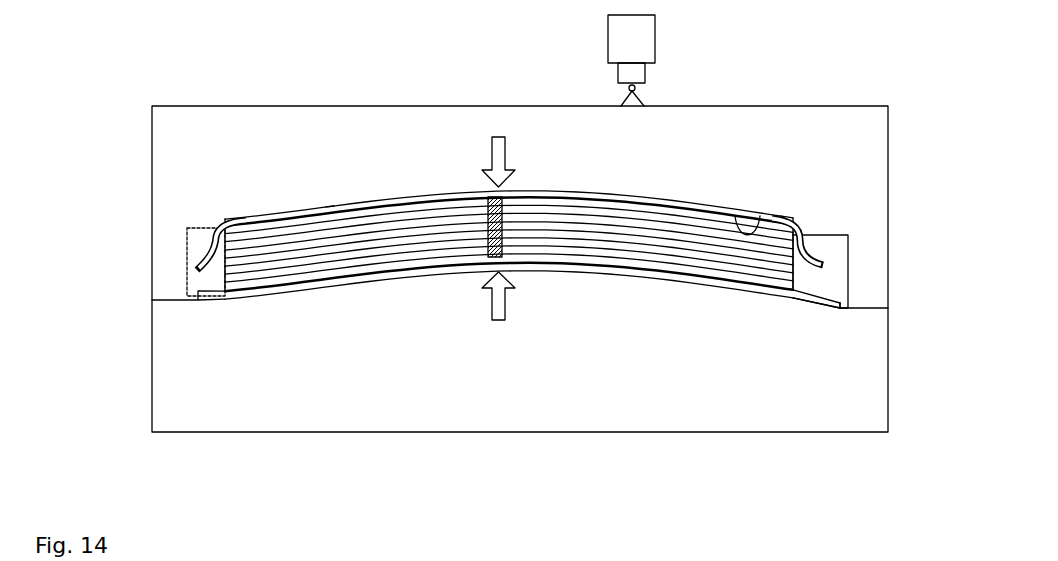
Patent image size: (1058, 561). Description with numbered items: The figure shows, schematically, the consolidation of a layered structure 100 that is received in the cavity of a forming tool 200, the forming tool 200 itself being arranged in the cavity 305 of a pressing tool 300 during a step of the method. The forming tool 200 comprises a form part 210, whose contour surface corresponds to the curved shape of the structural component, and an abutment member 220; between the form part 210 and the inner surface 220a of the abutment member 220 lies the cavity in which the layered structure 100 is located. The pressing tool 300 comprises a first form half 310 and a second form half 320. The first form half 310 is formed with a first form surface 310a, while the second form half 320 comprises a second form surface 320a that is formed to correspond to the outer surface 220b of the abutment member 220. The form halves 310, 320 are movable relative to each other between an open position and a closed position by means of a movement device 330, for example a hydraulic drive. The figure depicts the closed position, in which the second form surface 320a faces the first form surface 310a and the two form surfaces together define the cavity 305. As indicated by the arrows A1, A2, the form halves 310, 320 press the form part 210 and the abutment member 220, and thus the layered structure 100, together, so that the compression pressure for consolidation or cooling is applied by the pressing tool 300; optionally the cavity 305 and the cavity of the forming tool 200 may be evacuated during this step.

The layered structure 100 is at (805, 274).
The forming tool 200 is at (821, 215).
The form part 210 is at (820, 304).
The abutment member 220 is at (718, 208).
The inner surface of the abutment member 220a is at (760, 216).
The outer surface of the abutment member 220b is at (786, 211).
The pressing tool 300 is at (114, 95).
The cavity of the pressing tool 305 is at (845, 253).
The first form half 310 is at (338, 433).
The first form surface 310a is at (253, 288).
The second form half 320 is at (300, 106).
The second form surface 320a is at (330, 207).
The movement device 330 is at (587, 55).
The arrow A1 is at (508, 308).
The arrow A2 is at (507, 145).